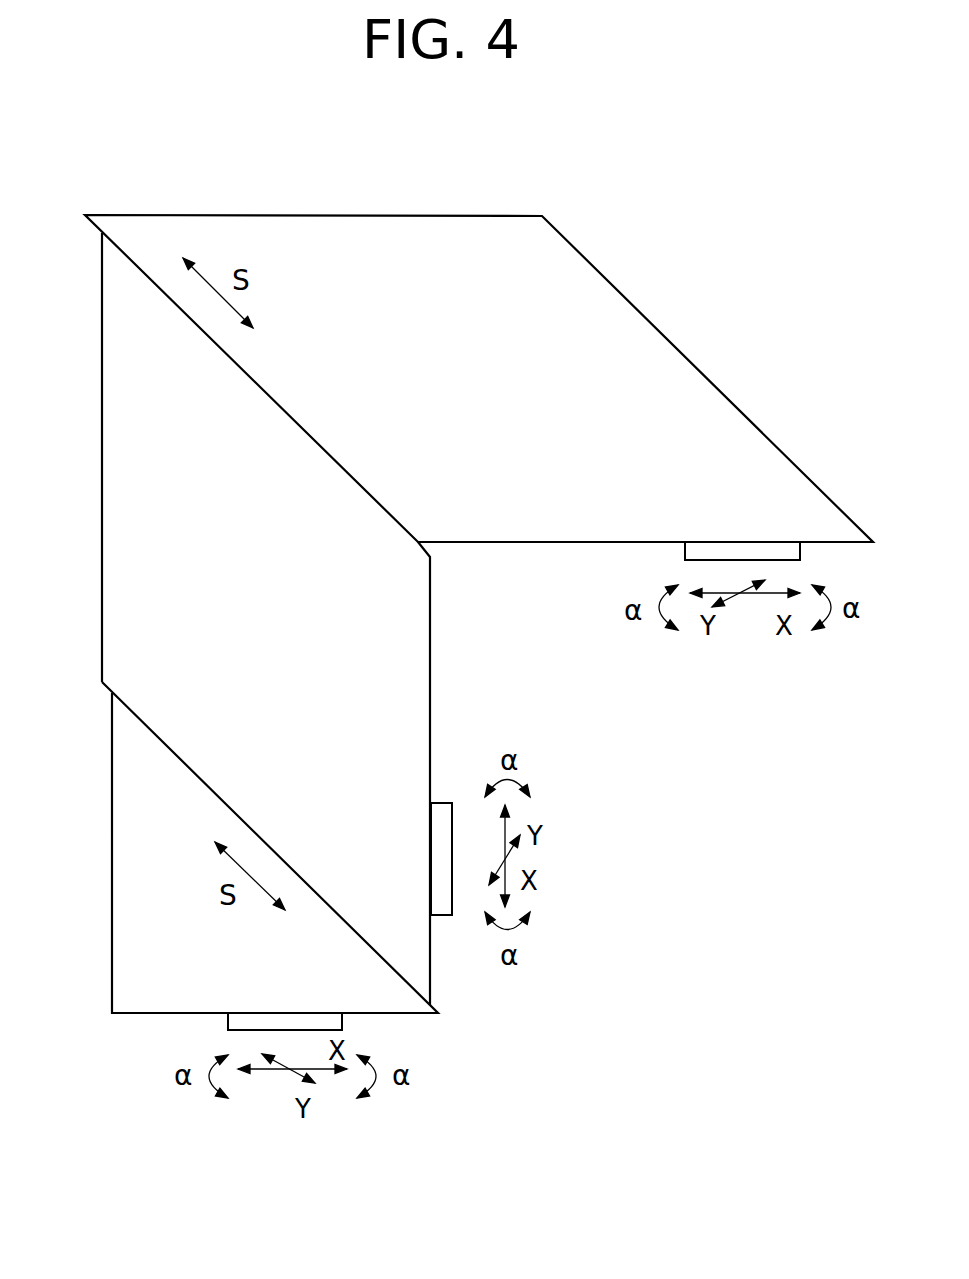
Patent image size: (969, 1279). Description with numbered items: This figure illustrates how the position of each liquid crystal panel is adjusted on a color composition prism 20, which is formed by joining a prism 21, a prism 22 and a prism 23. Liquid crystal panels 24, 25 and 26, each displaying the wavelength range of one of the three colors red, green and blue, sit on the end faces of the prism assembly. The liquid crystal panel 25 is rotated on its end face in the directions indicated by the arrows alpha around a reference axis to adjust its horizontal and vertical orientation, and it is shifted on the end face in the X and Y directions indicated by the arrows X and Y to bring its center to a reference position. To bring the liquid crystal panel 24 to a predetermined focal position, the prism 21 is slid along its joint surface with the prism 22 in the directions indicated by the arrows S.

The color composition prism 20 is at (408, 190).
The prism 21 is at (715, 403).
The prism 22 is at (115, 525).
The prism 23 is at (122, 925).
The liquid crystal panel 24 is at (800, 553).
The liquid crystal panel 25 is at (441, 803).
The liquid crystal panel 26 is at (345, 1020).